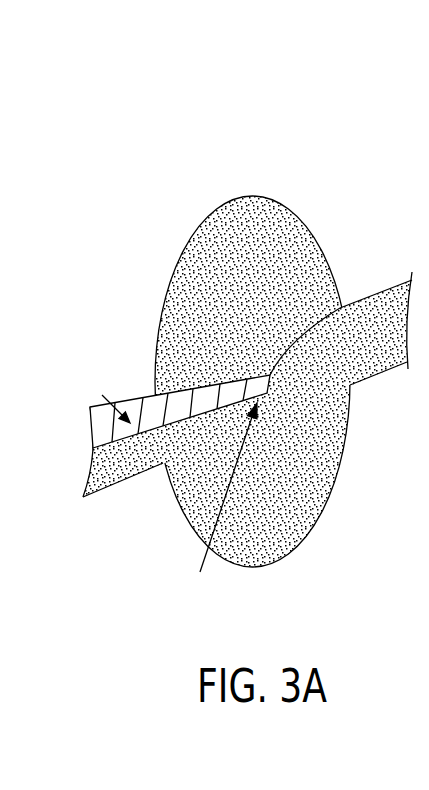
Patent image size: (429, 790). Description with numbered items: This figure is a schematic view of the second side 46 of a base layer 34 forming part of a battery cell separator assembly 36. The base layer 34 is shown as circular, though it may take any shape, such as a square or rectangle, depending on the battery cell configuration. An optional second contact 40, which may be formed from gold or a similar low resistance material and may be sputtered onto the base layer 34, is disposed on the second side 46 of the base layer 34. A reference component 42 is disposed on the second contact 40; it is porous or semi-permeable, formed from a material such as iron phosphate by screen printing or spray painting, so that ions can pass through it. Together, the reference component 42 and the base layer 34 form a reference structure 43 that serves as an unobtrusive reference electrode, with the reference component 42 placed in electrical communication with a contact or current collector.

The battery cell separator assembly 36 is at (250, 348).
The reference structure 43 is at (250, 348).
The base layer 34 is at (320, 460).
The reference component 42 is at (340, 305).
The second contact 40 is at (163, 428).
The second side 46 is at (240, 521).